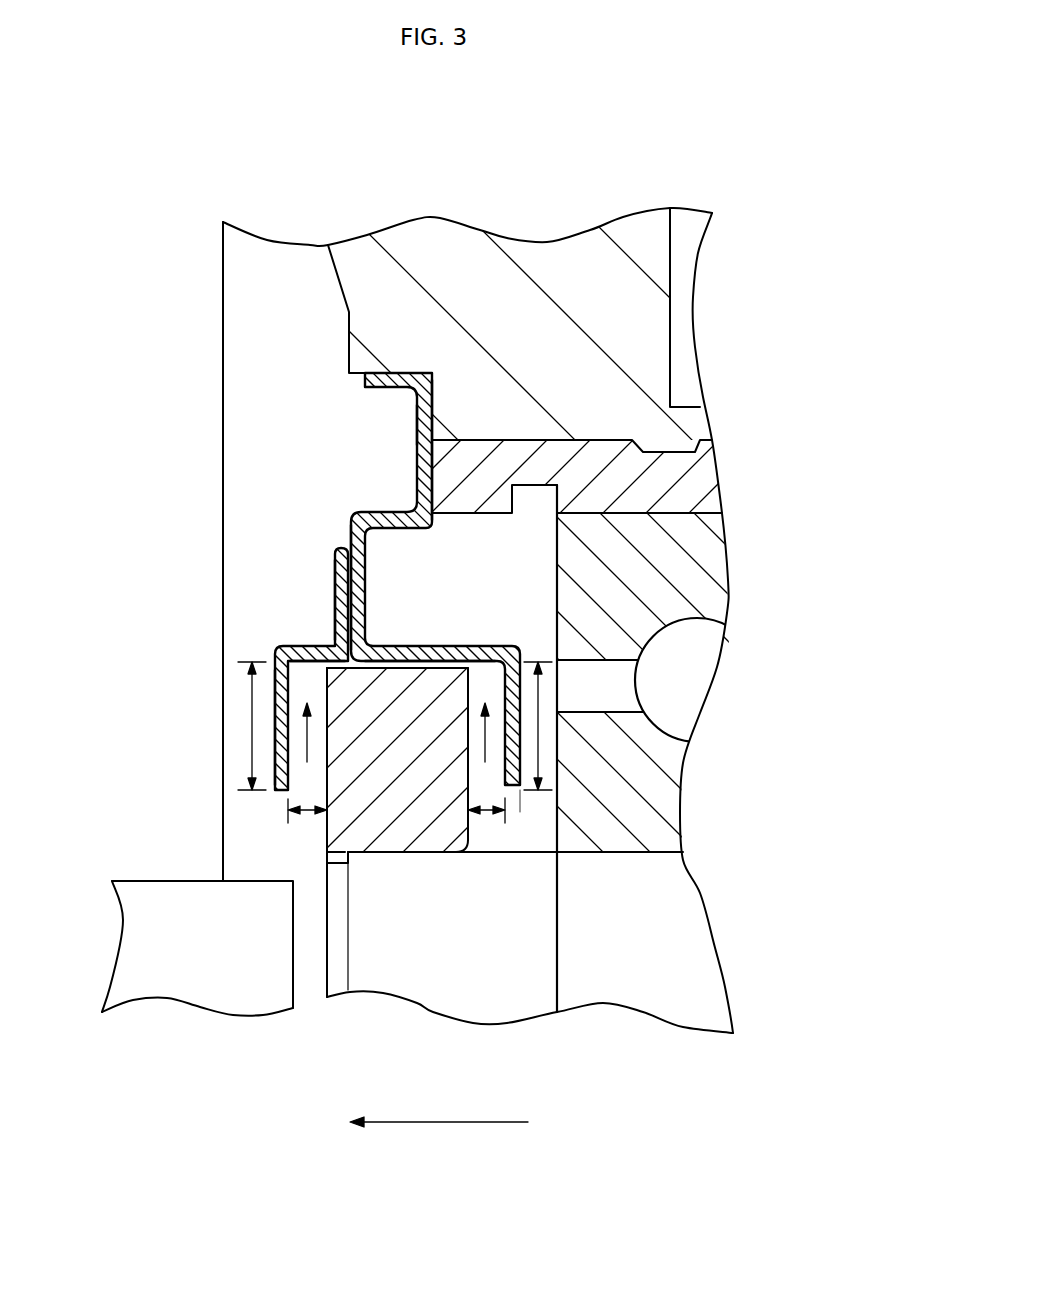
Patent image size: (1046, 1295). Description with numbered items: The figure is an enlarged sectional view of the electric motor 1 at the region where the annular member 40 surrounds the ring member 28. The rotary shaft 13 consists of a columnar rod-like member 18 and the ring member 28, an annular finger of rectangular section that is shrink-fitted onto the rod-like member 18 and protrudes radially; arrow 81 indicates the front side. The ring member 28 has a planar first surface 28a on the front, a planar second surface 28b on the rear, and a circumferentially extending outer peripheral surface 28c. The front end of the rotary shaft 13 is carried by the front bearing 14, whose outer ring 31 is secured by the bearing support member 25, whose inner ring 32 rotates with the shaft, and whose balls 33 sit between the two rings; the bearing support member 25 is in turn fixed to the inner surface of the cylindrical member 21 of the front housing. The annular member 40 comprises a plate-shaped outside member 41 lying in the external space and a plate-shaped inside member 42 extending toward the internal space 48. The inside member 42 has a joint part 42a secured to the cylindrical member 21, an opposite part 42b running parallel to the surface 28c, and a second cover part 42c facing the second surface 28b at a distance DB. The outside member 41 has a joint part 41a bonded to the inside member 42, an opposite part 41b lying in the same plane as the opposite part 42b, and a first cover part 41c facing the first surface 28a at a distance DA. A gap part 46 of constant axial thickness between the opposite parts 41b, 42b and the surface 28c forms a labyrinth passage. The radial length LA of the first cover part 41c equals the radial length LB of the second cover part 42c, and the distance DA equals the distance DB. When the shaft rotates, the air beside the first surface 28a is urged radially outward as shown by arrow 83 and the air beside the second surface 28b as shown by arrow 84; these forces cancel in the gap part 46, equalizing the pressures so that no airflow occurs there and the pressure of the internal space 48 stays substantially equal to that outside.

The electric motor 1 is at (690, 160).
The rotary shaft 13 is at (642, 975).
The front bearing 14 is at (822, 595).
The rod-like member 18 is at (145, 973).
The cylindrical member 21 is at (633, 333).
The bearing support member 25 is at (697, 477).
The ring member 28 is at (410, 820).
The first surface 28a is at (327, 850).
The second surface 28b is at (470, 817).
The surface 28c is at (420, 668).
The outer ring 31 is at (672, 587).
The inner ring 32 is at (643, 745).
The balls 33 is at (677, 677).
The annular member 40 is at (400, 425).
The outside member 41 is at (105, 573).
The joint part 41a is at (340, 598).
The opposite part 41b is at (307, 648).
The first cover part 41c is at (280, 715).
The inside member 42 is at (135, 453).
The joint part 42a is at (423, 457).
The opposite part 42b is at (345, 562).
The second cover part 42c is at (413, 652).
The gap part 46 is at (385, 663).
The internal space 48 is at (533, 807).
The arrow 81 is at (470, 1122).
The arrow 83 is at (308, 748).
The arrow 84 is at (485, 755).
The radial length LA is at (252, 723).
The radial length LB is at (540, 728).
The distance DA is at (313, 807).
The distance DB is at (490, 825).